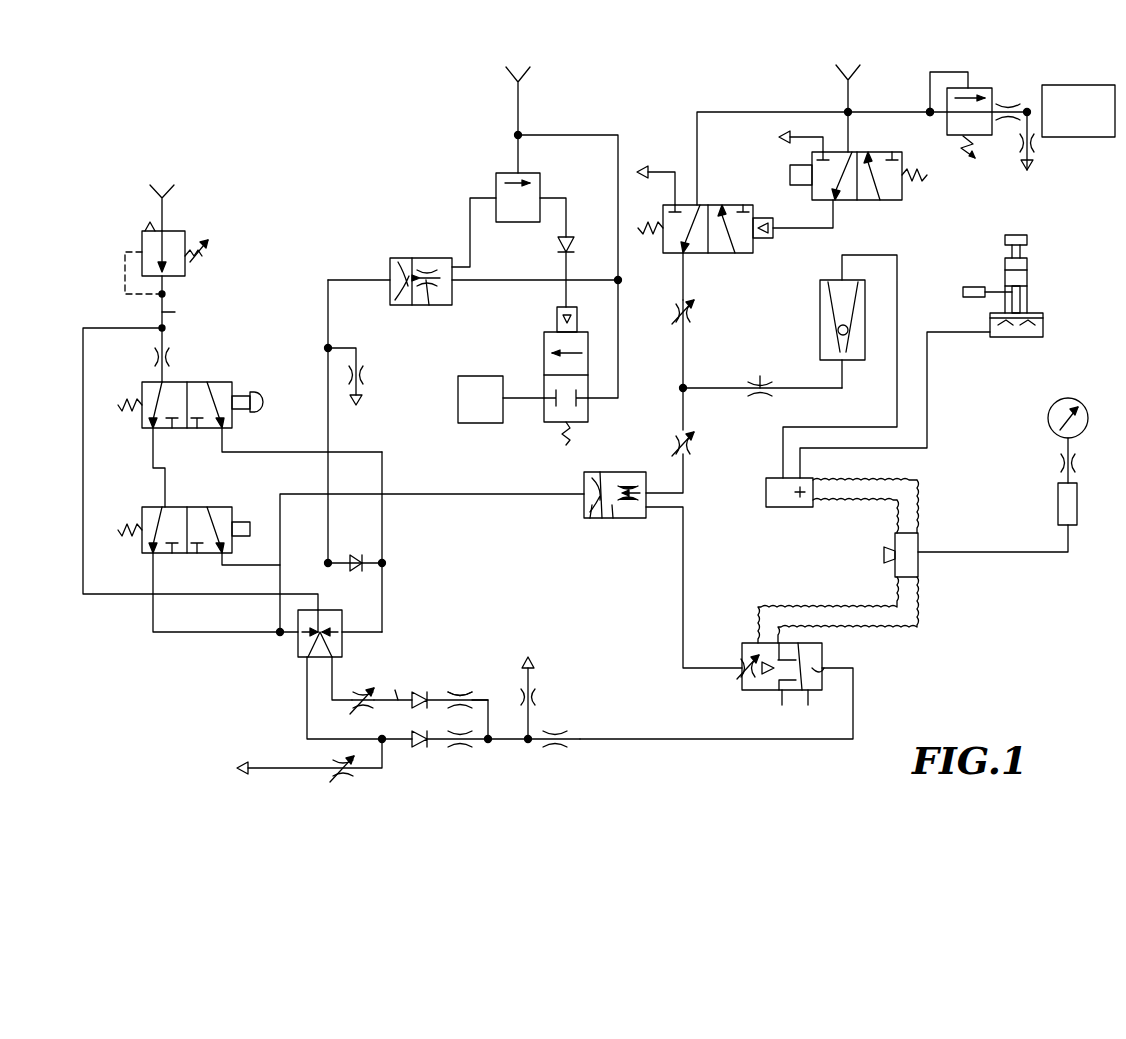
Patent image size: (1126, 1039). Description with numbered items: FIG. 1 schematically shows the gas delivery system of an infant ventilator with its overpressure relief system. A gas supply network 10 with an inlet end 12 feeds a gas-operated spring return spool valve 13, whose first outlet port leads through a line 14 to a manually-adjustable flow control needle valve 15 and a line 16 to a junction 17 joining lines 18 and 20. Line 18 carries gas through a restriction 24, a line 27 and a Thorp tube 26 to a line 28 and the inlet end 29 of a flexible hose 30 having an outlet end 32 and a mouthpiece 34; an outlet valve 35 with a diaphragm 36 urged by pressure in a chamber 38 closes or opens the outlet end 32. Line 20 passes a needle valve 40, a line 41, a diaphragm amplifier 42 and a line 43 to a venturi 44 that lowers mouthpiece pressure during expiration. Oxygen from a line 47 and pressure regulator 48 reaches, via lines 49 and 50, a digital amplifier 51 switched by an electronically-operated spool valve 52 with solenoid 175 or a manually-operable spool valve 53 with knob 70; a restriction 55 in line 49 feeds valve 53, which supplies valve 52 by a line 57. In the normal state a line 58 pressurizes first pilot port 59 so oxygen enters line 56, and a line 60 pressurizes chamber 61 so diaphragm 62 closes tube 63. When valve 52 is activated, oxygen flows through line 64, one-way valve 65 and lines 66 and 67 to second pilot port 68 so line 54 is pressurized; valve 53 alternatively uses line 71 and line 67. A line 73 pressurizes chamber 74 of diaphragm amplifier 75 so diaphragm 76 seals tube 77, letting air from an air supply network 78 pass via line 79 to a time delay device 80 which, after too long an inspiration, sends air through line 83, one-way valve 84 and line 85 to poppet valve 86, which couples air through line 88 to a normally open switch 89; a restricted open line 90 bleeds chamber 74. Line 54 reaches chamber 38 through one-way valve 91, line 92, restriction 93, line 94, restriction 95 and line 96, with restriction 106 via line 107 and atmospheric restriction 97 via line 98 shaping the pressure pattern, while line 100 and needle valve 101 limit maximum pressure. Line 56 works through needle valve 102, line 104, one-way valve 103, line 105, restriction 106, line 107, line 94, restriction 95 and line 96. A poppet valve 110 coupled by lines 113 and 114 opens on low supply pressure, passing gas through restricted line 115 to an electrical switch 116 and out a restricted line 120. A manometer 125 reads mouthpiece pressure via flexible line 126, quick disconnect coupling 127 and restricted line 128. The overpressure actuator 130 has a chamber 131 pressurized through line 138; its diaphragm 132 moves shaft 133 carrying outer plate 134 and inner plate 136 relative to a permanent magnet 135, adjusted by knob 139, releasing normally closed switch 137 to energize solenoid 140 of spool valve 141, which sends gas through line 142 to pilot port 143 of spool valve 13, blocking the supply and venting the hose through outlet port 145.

The gas supply network 10 is at (697, 150).
The inlet end 12 is at (845, 70).
The gas-operated spring return spool valve 13 is at (720, 256).
The line 14 is at (683, 278).
The manually-adjustable flow control needle valve 15 is at (694, 312).
The line 16 is at (685, 352).
The junction 17 is at (680, 388).
The line 18 is at (708, 392).
The line 20 is at (681, 408).
The restriction 24 is at (761, 376).
The Thorp tube 26 is at (820, 310).
The line 27 is at (790, 392).
The line 28 is at (897, 265).
The inlet end 29 is at (773, 507).
The flexible hose 30 is at (917, 490).
The outlet end 32 is at (766, 713).
The mouthpiece 34 is at (882, 556).
The outlet valve 35 is at (822, 650).
The diaphragm 36 is at (812, 713).
The chamber 38 is at (820, 678).
The restriction or needle valve 40 is at (694, 444).
The line 41 is at (687, 482).
The diaphragm amplifier 42 is at (628, 472).
The line 43 is at (686, 566).
The venturi 44 is at (738, 666).
The line 47 is at (168, 200).
The pressure regulator 48 is at (185, 278).
The line 49 is at (188, 314).
The line 50 is at (83, 380).
The digital amplifier 51 is at (342, 620).
The electronically-operated spring return spool valve 52 is at (197, 507).
The manually-operable spring return spool valve 53 is at (232, 382).
The line 54 is at (305, 704).
The restriction 55 is at (170, 357).
The line 56 is at (332, 676).
The line 57 is at (150, 464).
The line 58 is at (173, 632).
The first pilot port 59 is at (280, 636).
The line 60 is at (280, 520).
The chamber 61 is at (590, 522).
The diaphragm 62 is at (598, 500).
The tube 63 is at (613, 522).
The line 64 is at (227, 568).
The one-way valve 65 is at (354, 576).
The line 66 is at (364, 555).
The line 67 is at (382, 605).
The second pilot port 68 is at (342, 640).
The knob 70 is at (256, 390).
The line 71 is at (281, 452).
The line 73 is at (328, 432).
The chamber 74 is at (395, 270).
The diaphragm amplifier 75 is at (423, 258).
The diaphragm 76 is at (395, 292).
The tube 77 is at (426, 306).
The air supply network 78 is at (518, 150).
The line 79 is at (470, 212).
The time delay device 80 is at (500, 173).
The line 83 is at (568, 200).
The one-way valve 84 is at (571, 240).
The line 85 is at (568, 272).
The air-operated spring return poppet valve 86 is at (544, 342).
The line 88 is at (520, 398).
The normally open switch 89 is at (472, 376).
The restricted open line 90 is at (358, 352).
The one-way valve 91 is at (422, 758).
The line 92 is at (440, 752).
The restriction 93 is at (470, 752).
The line 94 is at (510, 748).
The restriction 95 is at (558, 730).
The line 96 is at (635, 739).
The restriction 97 is at (536, 700).
The line 98 is at (528, 722).
The line 100 is at (382, 768).
The manually-variable restriction or needle valve 101 is at (328, 768).
The manually-adjustable needle valve 102 is at (357, 718).
The one-way valve 103 is at (414, 690).
The line 104 is at (406, 683).
The line 105 is at (456, 690).
The restriction 106 is at (463, 690).
The line 107 is at (488, 700).
The spring biased normally open poppet valve 110 is at (986, 88).
The line 113 is at (932, 116).
The line 114 is at (970, 84).
The restricted line 115 is at (1008, 104).
The normally open gas-operated electrical switch 116 is at (1080, 85).
The restricted line 120 is at (1036, 145).
The manometer 125 is at (1053, 402).
The flexible line 126 is at (1030, 552).
The quick disconnect coupling 127 is at (1058, 513).
The line 128 is at (1058, 463).
The actuator 130 is at (1025, 300).
The chamber 131 is at (1034, 337).
The diaphragm 132 is at (1005, 337).
The shaft 133 is at (1030, 320).
The outer magnetically attractable member or steel plate 134 is at (1028, 268).
The permanent magnet 135 is at (1005, 280).
The inner magnetically attractable member or steel plate 136 is at (1005, 306).
The normally closed switch 137 is at (963, 291).
The line 138 is at (930, 405).
The knob 139 is at (1027, 248).
The solenoid 140 is at (790, 174).
The electrically-operated spring return spool valve 141 is at (866, 200).
The line 142 is at (814, 228).
The pilot port 143 is at (765, 240).
The outlet port 145 is at (677, 166).
The solenoid 175 is at (246, 522).